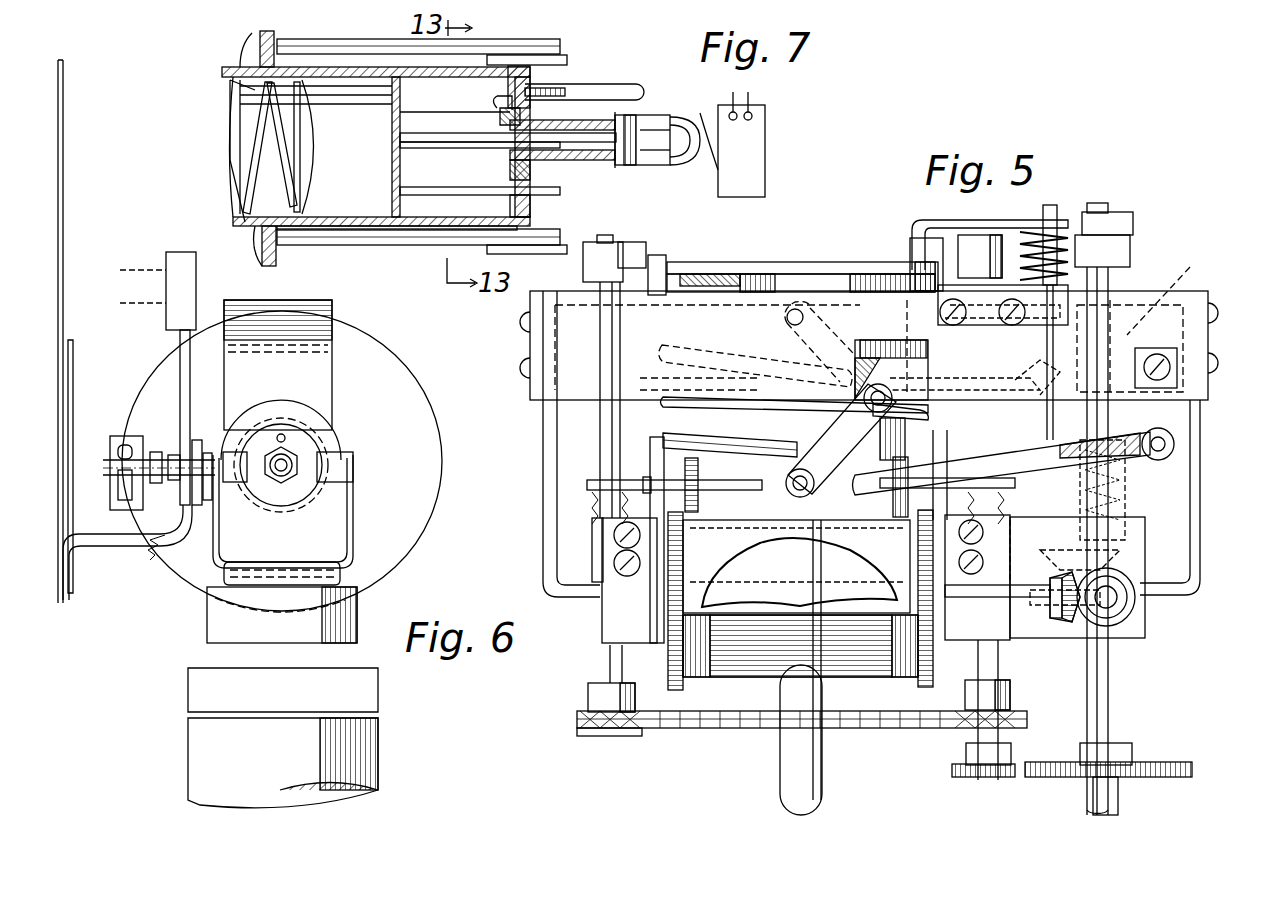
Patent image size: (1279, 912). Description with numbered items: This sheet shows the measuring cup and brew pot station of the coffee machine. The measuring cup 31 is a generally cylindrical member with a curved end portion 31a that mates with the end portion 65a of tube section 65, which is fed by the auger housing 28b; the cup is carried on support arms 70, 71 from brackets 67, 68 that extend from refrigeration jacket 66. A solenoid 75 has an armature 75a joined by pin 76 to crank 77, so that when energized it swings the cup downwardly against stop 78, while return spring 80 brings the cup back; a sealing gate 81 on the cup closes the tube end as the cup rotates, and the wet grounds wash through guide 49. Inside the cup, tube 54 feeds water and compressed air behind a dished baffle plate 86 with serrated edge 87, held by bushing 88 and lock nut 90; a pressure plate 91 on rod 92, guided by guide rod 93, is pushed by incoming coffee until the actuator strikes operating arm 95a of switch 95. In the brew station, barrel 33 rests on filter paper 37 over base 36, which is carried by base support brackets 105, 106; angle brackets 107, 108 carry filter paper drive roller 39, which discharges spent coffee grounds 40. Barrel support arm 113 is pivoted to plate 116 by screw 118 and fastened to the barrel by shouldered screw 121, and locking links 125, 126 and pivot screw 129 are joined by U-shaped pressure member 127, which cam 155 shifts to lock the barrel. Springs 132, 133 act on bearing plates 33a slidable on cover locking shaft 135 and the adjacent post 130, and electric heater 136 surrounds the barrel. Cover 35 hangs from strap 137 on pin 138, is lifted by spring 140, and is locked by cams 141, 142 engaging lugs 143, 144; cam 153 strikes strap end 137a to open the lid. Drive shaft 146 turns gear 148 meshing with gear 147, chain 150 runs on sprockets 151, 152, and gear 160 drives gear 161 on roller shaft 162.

In FIG. 7, the bracket 67 is at (365, 40).
In FIG. 7, the support arm 70 is at (565, 62).
In FIG. 7, the tube 54 is at (640, 94).
In FIG. 7, the cover 35 is at (535, 75).
In FIG. 5, the cover 35 is at (682, 268).
In FIG. 7, the cylinder housing 28b is at (235, 120).
In FIG. 7, the refrigeration jacket 66 is at (272, 267).
In FIG. 6, the refrigeration jacket 66 is at (425, 540).
In FIG. 7, the tube section 65 is at (252, 238).
In FIG. 7, the end portion 65a is at (305, 172).
In FIG. 7, the curved end portion 31a is at (318, 158).
In FIG. 7, the serrated edge 87 is at (490, 97).
In FIG. 7, the dished baffle plate 86 is at (500, 116).
In FIG. 7, the bushing 88 is at (540, 128).
In FIG. 7, the rod 92 is at (437, 148).
In FIG. 7, the pressure plate 91 is at (412, 180).
In FIG. 7, the guide rod / switch actuator 93 is at (437, 196).
In FIG. 7, the lock nut 90 is at (538, 165).
In FIG. 7, the operating arm 95a is at (712, 118).
In FIG. 7, the switch 95 is at (755, 150).
In FIG. 7, the bracket 68 is at (338, 247).
In FIG. 7, the measuring cup 31 is at (388, 230).
In FIG. 6, the measuring cup 31 is at (288, 520).
In FIG. 7, the support arm 71 is at (570, 226).
In FIG. 6, the solenoid 75 is at (170, 252).
In FIG. 6, the armature 75a is at (180, 392).
In FIG. 6, the sealing gate 81 is at (333, 370).
In FIG. 6, the pin 76 is at (210, 500).
In FIG. 6, the crank 77 is at (203, 453).
In FIG. 6, the return spring 80 is at (160, 528).
In FIG. 6, the stop 78 is at (287, 575).
In FIG. 6, the guide 49 is at (212, 624).
In FIG. 6, the barrel 33 is at (196, 742).
In FIG. 5, the barrel 33 is at (715, 282).
In FIG. 5, the locking cam 141 is at (620, 246).
In FIG. 5, the lug 143 is at (639, 275).
In FIG. 5, the post 130 is at (600, 435).
In FIG. 5, the base support bracket 105 is at (543, 445).
In FIG. 5, the base support bracket 106 is at (1195, 552).
In FIG. 5, the lug 144 is at (912, 265).
In FIG. 5, the strap 137 is at (925, 230).
In FIG. 5, the locking cam 142 is at (985, 238).
In FIG. 5, the pin 138 is at (1046, 225).
In FIG. 5, the end of lid strap 137a is at (1060, 228).
In FIG. 5, the cam 153 is at (1133, 228).
In FIG. 5, the spring 140 is at (1070, 290).
In FIG. 5, the cam 155 is at (1175, 293).
In FIG. 5, the plate 116 is at (1175, 412).
In FIG. 5, the barrel locking link 126 is at (805, 322).
In FIG. 5, the electric heater 136 is at (667, 402).
In FIG. 5, the U-shaped pressure member 127 is at (912, 365).
In FIG. 5, the pivot screw 129 is at (842, 439).
In FIG. 5, the cover locking shaft 135 is at (980, 432).
In FIG. 5, the barrel locking link 125 is at (830, 420).
In FIG. 5, the shouldered screw 121 is at (788, 492).
In FIG. 5, the barrel support arm 113 is at (1030, 455).
In FIG. 5, the screw 118 is at (1175, 444).
In FIG. 5, the bearing plate 33a is at (592, 480).
In FIG. 5, the spring 132 is at (592, 500).
In FIG. 5, the spring 133 is at (1005, 504).
In FIG. 5, the base 36 is at (592, 560).
In FIG. 5, the angle bracket 107 is at (602, 628).
In FIG. 5, the filter paper drive roller 39 is at (660, 669).
In FIG. 5, the filter paper 37 is at (752, 615).
In FIG. 5, the spent coffee grounds 40 is at (799, 572).
In FIG. 5, the angle bracket 108 is at (1148, 612).
In FIG. 5, the gear 160 is at (1125, 578).
In FIG. 5, the gear 161 is at (1060, 628).
In FIG. 5, the filter paper drive roller shaft 162 is at (975, 608).
In FIG. 5, the sprocket 151 is at (586, 698).
In FIG. 5, the sprocket 152 is at (1012, 706).
In FIG. 5, the chain 150 is at (675, 730).
In FIG. 5, the gear 147 is at (1012, 766).
In FIG. 5, the gear 148 is at (1135, 753).
In FIG. 5, the drive shaft 146 is at (1118, 800).